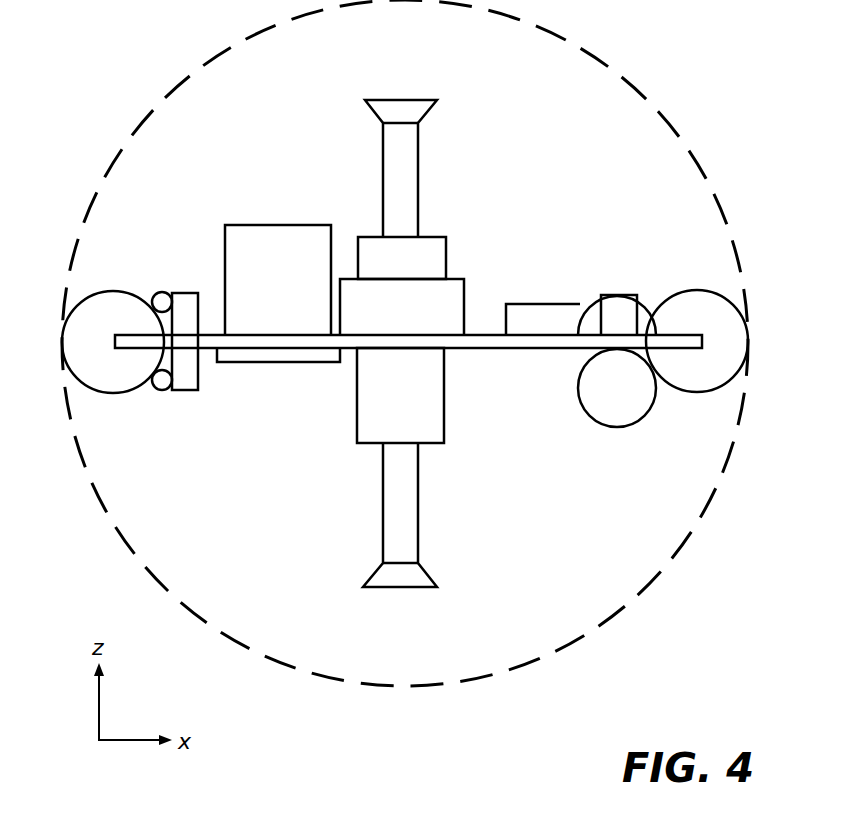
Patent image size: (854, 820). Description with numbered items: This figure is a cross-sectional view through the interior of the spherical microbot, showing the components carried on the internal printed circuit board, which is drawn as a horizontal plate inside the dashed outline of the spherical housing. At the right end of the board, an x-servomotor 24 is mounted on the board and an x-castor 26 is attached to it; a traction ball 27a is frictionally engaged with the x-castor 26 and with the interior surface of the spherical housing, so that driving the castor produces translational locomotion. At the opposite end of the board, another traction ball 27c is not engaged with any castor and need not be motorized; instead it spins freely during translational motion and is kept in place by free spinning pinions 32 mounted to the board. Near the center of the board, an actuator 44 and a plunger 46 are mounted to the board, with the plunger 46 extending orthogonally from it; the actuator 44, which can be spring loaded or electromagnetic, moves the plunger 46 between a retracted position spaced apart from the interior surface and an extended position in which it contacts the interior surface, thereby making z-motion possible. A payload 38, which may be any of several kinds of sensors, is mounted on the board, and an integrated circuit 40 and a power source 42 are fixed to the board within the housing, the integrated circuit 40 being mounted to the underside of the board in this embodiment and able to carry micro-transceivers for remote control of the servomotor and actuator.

The x-servomotor 24 is at (613, 307).
The x-castor 26 is at (640, 282).
The traction ball 27a is at (722, 323).
The traction ball 27c is at (100, 375).
The free spinning pinions 32 is at (158, 290).
The payload 38 is at (258, 235).
The integrated circuit 40 is at (450, 290).
The power source 42 is at (559, 325).
The actuator 44 is at (433, 245).
The plunger 46 is at (417, 158).